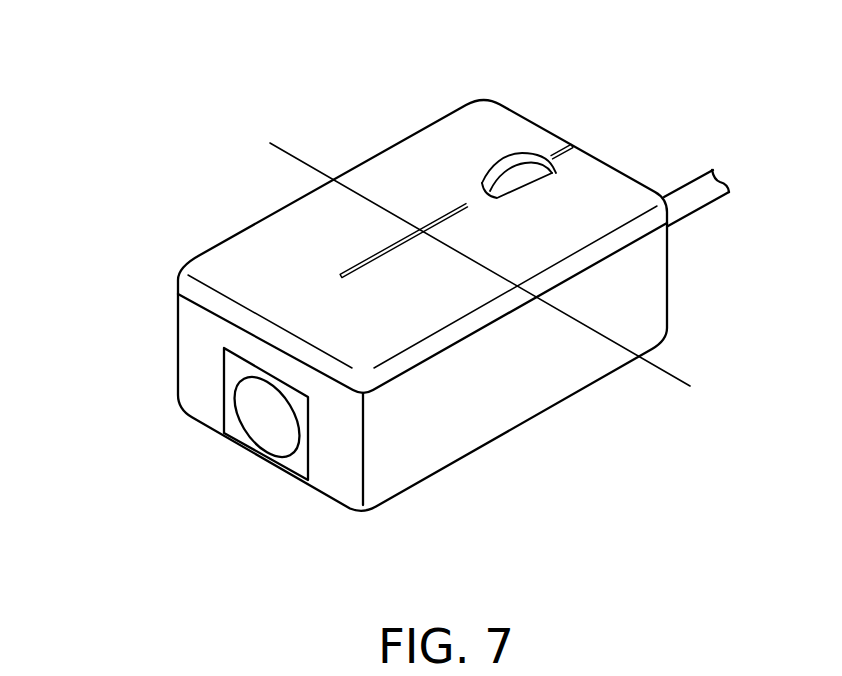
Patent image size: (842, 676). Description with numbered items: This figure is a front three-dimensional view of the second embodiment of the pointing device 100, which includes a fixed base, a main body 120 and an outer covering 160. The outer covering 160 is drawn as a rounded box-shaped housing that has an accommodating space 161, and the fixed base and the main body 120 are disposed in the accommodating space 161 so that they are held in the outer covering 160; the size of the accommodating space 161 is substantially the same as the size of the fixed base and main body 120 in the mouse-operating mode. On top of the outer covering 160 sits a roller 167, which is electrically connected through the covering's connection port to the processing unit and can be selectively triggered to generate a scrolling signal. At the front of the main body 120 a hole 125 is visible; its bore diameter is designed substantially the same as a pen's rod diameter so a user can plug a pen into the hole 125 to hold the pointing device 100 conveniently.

The pointing device 100 is at (183, 93).
The outer covering 160 is at (245, 251).
The accommodating space 161 is at (688, 195).
The roller 167 is at (517, 163).
The main body 120 is at (293, 465).
The hole 125 is at (267, 420).